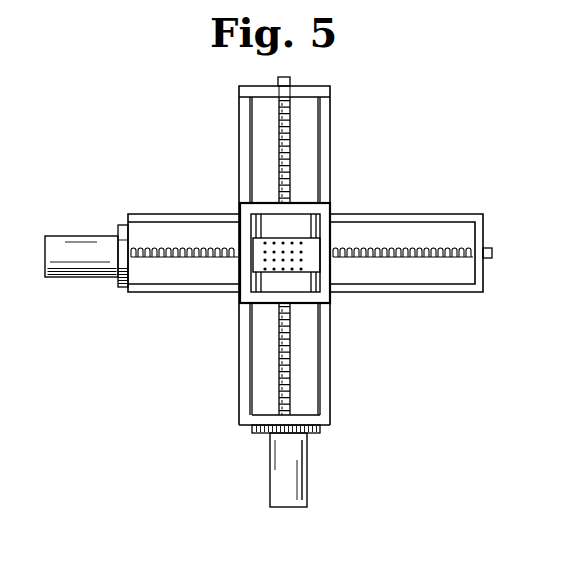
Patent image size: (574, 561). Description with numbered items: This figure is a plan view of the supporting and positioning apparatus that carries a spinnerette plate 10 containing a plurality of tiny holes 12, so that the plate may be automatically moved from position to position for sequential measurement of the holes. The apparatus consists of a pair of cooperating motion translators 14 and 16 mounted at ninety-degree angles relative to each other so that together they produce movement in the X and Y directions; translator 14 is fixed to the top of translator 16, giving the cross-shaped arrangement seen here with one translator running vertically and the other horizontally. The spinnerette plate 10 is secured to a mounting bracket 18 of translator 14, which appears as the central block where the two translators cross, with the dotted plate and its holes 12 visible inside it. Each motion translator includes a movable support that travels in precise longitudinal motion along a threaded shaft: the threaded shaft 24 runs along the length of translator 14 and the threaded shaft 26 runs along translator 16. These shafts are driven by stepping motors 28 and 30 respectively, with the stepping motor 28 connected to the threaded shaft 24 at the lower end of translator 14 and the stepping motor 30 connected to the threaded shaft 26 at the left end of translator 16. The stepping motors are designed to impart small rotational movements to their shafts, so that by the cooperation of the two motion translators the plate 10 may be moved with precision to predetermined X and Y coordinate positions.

The spinnerette plate 10 is at (318, 271).
The tiny holes 12 is at (291, 243).
The motion translator 14 is at (339, 391).
The motion translator 16 is at (419, 205).
The mounting bracket 18 is at (242, 206).
The threaded shaft 24 is at (282, 368).
The threaded shaft 26 is at (453, 248).
The stepping motor 28 is at (307, 470).
The stepping motor 30 is at (77, 240).